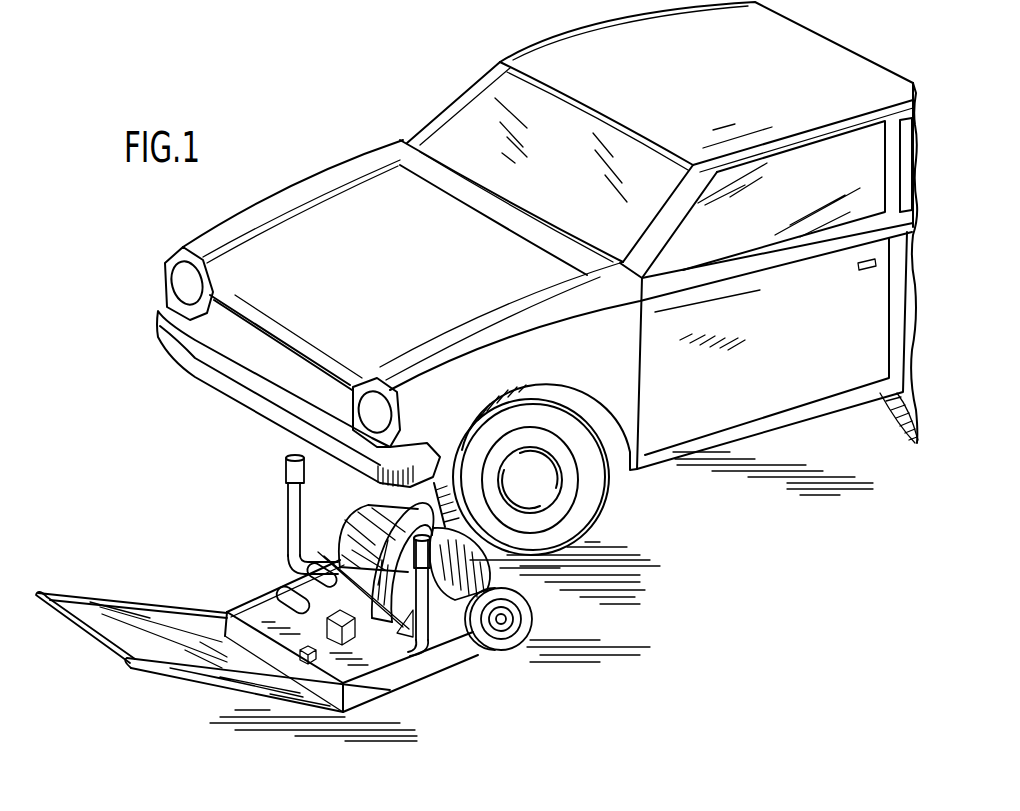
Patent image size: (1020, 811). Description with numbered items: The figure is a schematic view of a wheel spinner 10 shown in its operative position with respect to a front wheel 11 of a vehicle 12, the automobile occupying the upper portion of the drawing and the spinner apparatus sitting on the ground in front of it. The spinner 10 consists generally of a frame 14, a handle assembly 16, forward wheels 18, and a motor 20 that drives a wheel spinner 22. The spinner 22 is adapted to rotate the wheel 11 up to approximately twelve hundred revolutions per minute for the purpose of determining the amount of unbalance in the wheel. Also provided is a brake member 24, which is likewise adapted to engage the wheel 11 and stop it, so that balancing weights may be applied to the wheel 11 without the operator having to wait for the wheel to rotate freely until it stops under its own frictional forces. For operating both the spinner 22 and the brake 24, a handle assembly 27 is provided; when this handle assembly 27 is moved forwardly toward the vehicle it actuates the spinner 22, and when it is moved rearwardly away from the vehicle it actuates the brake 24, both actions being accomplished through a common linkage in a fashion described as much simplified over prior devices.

The wheel spinner 10 is at (460, 690).
The front wheel 11 is at (582, 512).
The vehicle 12 is at (752, 427).
The frame 14 is at (411, 662).
The handle assembly 16 is at (210, 680).
The forward wheels 18 is at (517, 650).
The motor 20 is at (352, 530).
The wheel spinner 22 is at (485, 569).
The brake member 24 is at (318, 552).
The handle assembly 27 is at (287, 517).